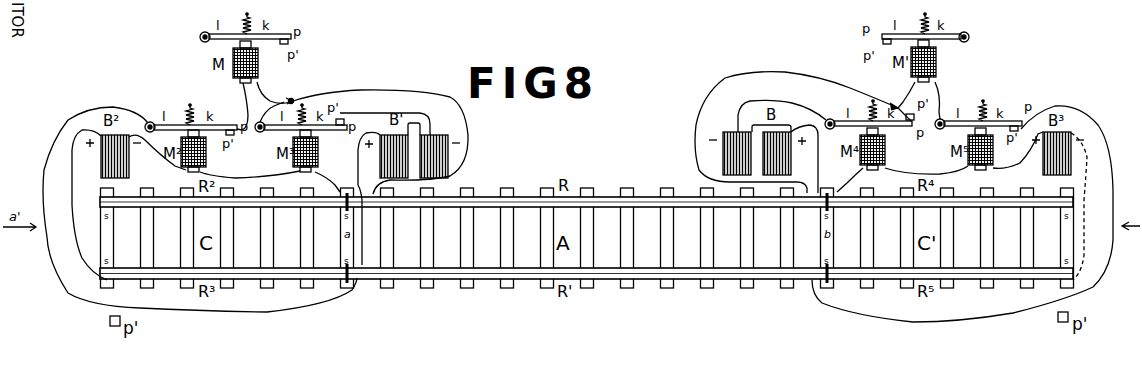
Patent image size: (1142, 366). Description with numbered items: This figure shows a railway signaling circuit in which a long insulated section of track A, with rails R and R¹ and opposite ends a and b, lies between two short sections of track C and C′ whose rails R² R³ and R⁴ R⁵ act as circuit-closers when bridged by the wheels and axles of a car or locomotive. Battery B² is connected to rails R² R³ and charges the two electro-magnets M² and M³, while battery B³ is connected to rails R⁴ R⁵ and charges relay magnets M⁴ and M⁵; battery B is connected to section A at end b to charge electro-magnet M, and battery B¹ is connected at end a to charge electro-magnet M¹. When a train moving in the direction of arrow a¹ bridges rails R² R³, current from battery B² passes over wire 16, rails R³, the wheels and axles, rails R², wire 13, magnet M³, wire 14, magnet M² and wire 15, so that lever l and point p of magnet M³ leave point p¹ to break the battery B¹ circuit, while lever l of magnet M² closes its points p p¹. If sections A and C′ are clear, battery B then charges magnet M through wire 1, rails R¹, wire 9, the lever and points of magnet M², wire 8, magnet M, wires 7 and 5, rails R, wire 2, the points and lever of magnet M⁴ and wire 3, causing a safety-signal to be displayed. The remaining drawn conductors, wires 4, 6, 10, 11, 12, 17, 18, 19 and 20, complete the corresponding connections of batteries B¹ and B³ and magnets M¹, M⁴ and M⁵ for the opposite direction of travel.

The wire 1 is at (804, 159).
The wire 2 is at (797, 132).
The wire 3 is at (782, 109).
The conductor from battery B' to track 4 is at (364, 198).
The wire 5 is at (272, 112).
The conductor from junction to battery B' and track 6 is at (380, 132).
The wire 7 is at (275, 90).
The wire 8 is at (237, 105).
The wire 9 is at (195, 219).
The conductor from magnet M' to relay M4 armature 10 is at (901, 102).
The conductor from magnet M' to relay M5 pivot 11 is at (946, 100).
The conductor from relay M5 contact around section C' to rail joint b 12 is at (972, 220).
The wire 13 is at (327, 182).
The wire 14 is at (250, 169).
The wire 15 is at (157, 154).
The wire 16 is at (83, 205).
The conductor from battery B3 to rail end 17 is at (1087, 206).
The conductor from magnet M5 to battery B3 18 is at (1018, 155).
The conductor connecting magnets M4 and M5 19 is at (926, 166).
The conductor from magnet M4 to rail joint b 20 is at (849, 180).